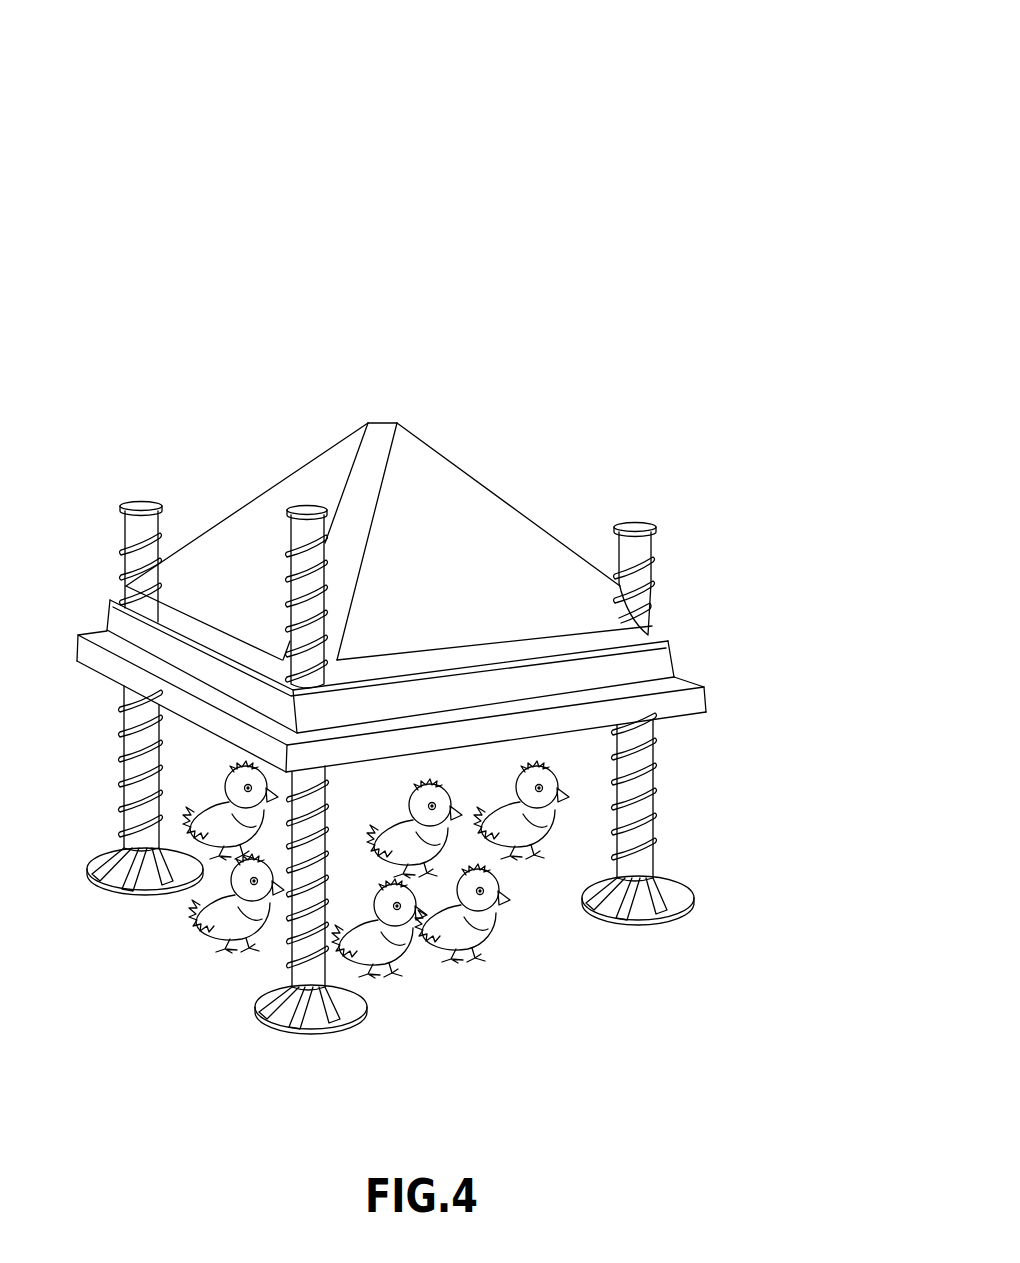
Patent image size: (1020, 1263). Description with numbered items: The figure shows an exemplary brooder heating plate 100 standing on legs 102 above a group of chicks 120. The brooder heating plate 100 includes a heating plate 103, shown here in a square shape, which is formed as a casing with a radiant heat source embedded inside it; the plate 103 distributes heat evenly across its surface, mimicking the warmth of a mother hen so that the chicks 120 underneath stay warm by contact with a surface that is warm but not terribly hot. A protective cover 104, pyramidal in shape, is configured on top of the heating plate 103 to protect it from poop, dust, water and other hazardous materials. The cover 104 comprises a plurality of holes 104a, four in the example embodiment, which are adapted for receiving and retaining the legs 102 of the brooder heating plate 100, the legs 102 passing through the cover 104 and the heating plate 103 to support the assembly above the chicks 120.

The brooder heating plate 100 is at (597, 75).
The leg 102 is at (152, 482).
The heating plate 103 is at (685, 707).
The protective cover 104 is at (480, 480).
The hole 104a is at (283, 660).
The chicks 120 is at (478, 943).